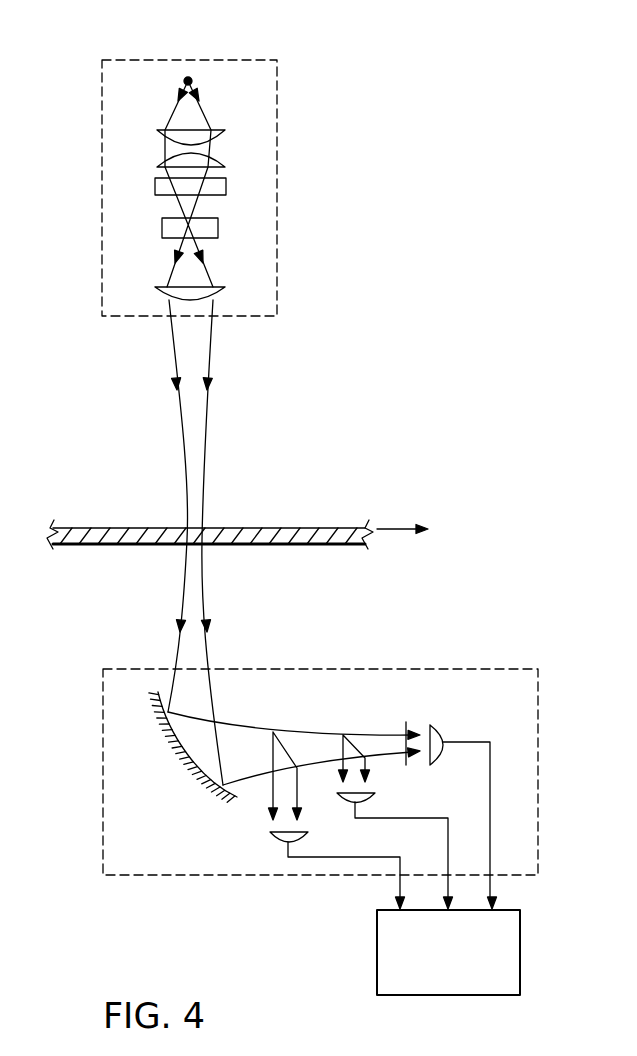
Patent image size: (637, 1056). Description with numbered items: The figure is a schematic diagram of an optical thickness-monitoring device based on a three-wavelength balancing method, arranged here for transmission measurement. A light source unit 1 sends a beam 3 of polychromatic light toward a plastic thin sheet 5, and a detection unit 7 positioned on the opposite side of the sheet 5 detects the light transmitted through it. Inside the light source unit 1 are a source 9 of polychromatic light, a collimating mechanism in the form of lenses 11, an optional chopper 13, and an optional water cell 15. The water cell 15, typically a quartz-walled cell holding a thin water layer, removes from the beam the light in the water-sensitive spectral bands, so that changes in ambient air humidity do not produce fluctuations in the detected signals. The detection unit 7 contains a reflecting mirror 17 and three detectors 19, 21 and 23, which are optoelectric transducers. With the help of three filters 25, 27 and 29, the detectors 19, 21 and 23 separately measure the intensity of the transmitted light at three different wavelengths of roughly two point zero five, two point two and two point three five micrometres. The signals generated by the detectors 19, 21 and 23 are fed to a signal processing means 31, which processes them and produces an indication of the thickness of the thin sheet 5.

The light source unit 1 is at (277, 62).
The beam 3 is at (205, 427).
The plastic thin sheet 5 is at (247, 527).
The detection unit 7 is at (510, 669).
The source of polychromatic light 9 is at (188, 81).
The lenses 11 is at (158, 288).
The chopper 13 is at (218, 228).
The water cell 15 is at (226, 186).
The reflecting mirror 17 is at (172, 735).
The detector 19 is at (268, 840).
The detector 21 is at (350, 804).
The detector 23 is at (436, 730).
The filter 25 is at (273, 732).
The filter 27 is at (343, 735).
The filter 29 is at (406, 722).
The signal processing means 31 is at (520, 933).